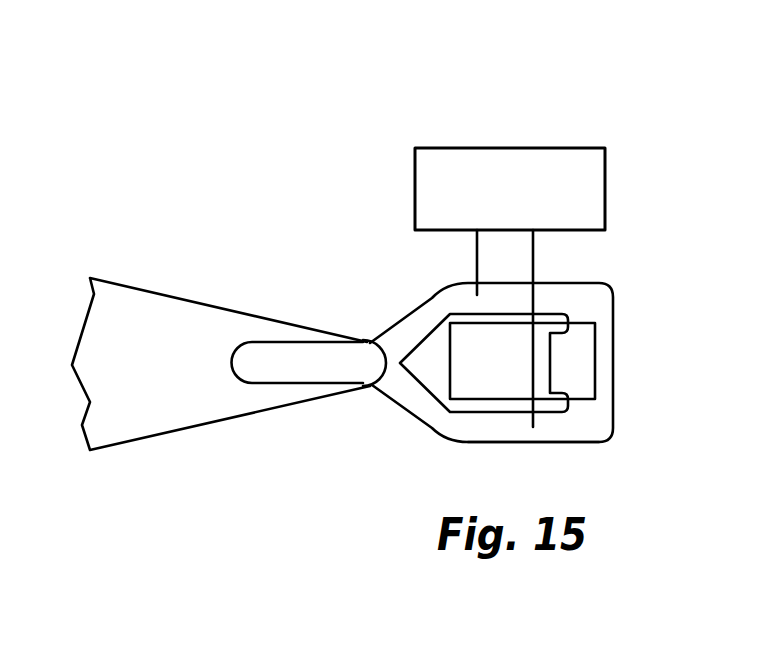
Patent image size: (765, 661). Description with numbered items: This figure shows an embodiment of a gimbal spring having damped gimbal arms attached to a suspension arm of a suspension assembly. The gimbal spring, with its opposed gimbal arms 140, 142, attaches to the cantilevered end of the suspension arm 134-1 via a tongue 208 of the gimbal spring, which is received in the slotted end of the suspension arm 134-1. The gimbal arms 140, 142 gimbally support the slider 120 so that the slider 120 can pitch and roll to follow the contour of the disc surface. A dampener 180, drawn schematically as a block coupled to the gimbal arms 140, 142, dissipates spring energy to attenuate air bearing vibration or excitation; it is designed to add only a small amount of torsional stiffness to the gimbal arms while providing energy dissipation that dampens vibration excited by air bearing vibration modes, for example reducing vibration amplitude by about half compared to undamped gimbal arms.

The suspension arm 134-1 is at (160, 335).
The tongue 208 is at (265, 360).
The gimbal arm 140 is at (564, 283).
The gimbal arm 142 is at (563, 427).
The slider 120 is at (512, 374).
The dampener 180 is at (542, 148).